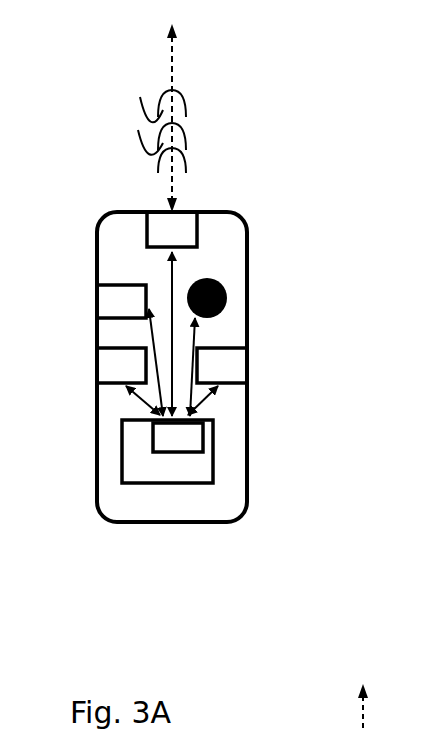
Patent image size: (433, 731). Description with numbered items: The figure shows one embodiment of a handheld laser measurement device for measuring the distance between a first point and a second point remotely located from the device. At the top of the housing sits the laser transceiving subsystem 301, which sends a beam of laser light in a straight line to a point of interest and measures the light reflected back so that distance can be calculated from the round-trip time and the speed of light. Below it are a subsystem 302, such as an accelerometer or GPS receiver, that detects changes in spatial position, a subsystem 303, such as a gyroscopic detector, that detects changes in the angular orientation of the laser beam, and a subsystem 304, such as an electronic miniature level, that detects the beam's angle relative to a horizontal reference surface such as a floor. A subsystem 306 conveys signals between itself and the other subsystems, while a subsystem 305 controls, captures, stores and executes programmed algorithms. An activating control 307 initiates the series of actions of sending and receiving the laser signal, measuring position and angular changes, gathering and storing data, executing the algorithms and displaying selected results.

The laser transceiving subsystem 301 is at (193, 211).
The spatial position subsystem 302 is at (88, 365).
The angular orientation subsystem 303 is at (250, 365).
The beam angle subsystem 304 is at (87, 301).
The control subsystem 305 is at (167, 483).
The signal conveying subsystem 306 is at (203, 440).
The activating control 307 is at (225, 300).